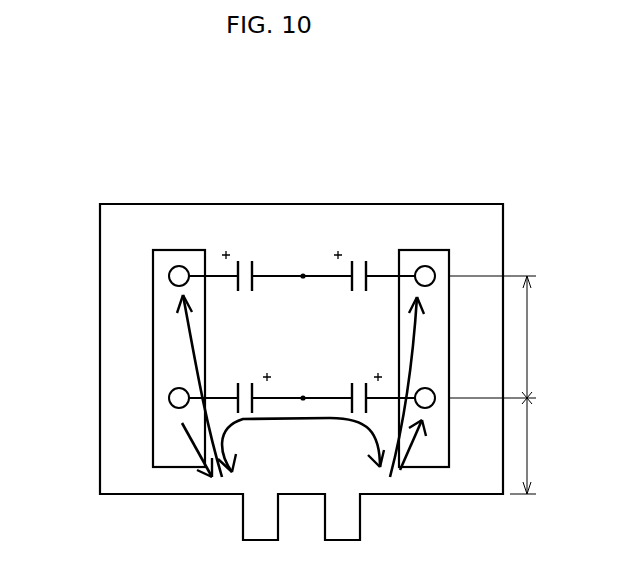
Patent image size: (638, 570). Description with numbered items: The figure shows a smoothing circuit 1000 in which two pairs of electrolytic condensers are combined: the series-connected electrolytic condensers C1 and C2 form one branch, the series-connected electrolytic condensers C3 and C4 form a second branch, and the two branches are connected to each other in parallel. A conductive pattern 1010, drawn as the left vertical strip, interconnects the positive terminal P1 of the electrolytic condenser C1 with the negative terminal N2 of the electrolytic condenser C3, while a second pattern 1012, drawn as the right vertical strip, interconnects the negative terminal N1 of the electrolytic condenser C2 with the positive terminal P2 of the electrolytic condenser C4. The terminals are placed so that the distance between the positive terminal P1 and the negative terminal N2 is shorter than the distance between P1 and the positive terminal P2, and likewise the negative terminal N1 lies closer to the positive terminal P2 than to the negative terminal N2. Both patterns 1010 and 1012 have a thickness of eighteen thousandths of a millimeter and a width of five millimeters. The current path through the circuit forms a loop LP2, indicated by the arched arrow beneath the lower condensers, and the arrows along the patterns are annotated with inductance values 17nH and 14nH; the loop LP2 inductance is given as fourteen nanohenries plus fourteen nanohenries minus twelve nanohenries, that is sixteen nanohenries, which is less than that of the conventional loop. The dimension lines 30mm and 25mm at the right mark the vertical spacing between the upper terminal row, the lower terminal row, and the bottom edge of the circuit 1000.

The smoothing circuit 1000 is at (503, 168).
The pattern 1010 is at (180, 264).
The pattern 1012 is at (424, 264).
The electrolytic condenser C1 is at (238, 260).
The electrolytic condenser C2 is at (352, 260).
The electrolytic condenser C3 is at (238, 382).
The electrolytic condenser C4 is at (352, 382).
The positive terminal P1 is at (178, 266).
The negative terminal N1 is at (426, 266).
The negative terminal N2 is at (176, 388).
The positive terminal P2 is at (428, 388).
The loop LP2 is at (301, 422).
The inductance 17nH current path 17nH is at (165, 317).
The inductance of 14 nH 14nH is at (165, 442).
The dimension 30mm is at (518, 340).
The dimension 25mm is at (549, 446).